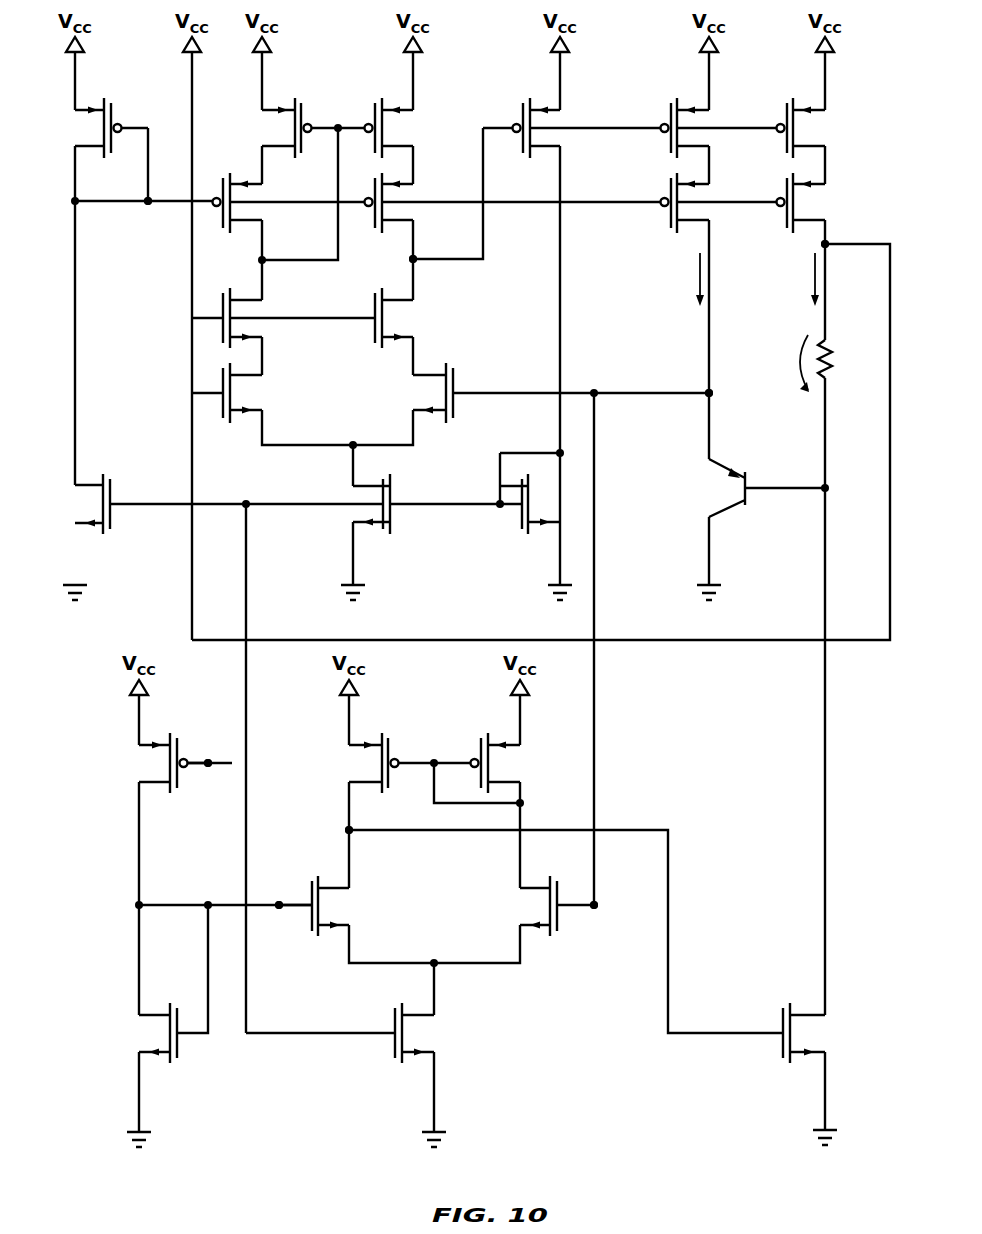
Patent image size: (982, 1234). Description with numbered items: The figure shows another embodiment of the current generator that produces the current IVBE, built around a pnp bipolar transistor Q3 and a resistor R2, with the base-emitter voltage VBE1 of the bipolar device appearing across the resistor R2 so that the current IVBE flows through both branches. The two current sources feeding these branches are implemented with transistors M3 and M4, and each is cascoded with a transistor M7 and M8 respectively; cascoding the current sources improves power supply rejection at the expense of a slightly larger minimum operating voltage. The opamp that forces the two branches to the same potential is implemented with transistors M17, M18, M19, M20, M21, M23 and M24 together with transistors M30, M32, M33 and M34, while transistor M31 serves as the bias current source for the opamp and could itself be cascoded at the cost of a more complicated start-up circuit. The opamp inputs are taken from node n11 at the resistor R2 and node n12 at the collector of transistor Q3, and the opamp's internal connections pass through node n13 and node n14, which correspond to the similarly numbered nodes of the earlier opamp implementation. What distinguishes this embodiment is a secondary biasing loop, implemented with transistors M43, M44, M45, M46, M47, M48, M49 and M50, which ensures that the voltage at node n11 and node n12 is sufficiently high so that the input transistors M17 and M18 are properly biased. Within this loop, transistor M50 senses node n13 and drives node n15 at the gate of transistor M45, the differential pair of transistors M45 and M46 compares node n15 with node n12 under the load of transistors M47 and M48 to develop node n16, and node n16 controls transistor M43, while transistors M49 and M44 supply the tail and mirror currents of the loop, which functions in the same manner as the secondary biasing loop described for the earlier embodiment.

The transistor M34 is at (95, 128).
The transistor M24 is at (284, 128).
The transistor M23 is at (390, 128).
The bias current source transistor M31 is at (571, 128).
The transistor M3 is at (719, 128).
The transistor M4 is at (809, 128).
The transistor M21 is at (342, 203).
The cascode transistor M7 is at (579, 203).
The cascode transistor M8 is at (817, 203).
The node n14 is at (158, 212).
The node n13 is at (324, 500).
The node n11 is at (845, 234).
The node n12 is at (650, 647).
The node n16 is at (327, 831).
The node n15 is at (282, 893).
The transistor M20 is at (283, 317).
The transistor M19 is at (404, 318).
The transistor M18 is at (237, 393).
The transistor M17 is at (418, 393).
The transistor M33 is at (75, 504).
The transistor M32 is at (345, 503).
The transistor M30 is at (540, 504).
The pnp bipolar transistor Q3 is at (744, 482).
The resistor R2 is at (837, 359).
The base-emitter voltage VBE1 is at (775, 363).
The IVBE current IVBE is at (735, 279).
The transistor M50 is at (159, 763).
The transistor M47 is at (373, 763).
The transistor M48 is at (494, 763).
The transistor M45 is at (327, 906).
The transistor M46 is at (546, 906).
The transistor M49 is at (142, 1033).
The transistor M44 is at (353, 1033).
The transistor M43 is at (819, 1033).